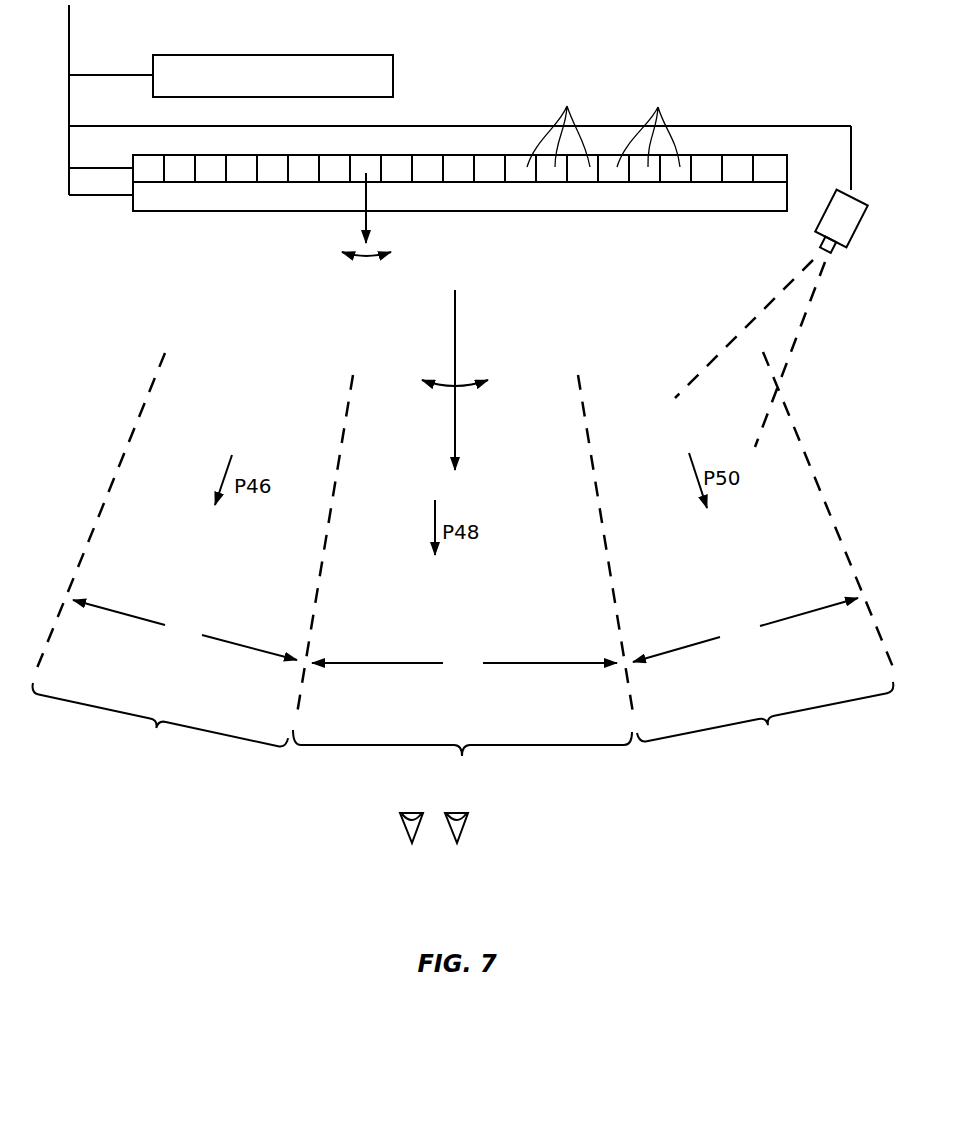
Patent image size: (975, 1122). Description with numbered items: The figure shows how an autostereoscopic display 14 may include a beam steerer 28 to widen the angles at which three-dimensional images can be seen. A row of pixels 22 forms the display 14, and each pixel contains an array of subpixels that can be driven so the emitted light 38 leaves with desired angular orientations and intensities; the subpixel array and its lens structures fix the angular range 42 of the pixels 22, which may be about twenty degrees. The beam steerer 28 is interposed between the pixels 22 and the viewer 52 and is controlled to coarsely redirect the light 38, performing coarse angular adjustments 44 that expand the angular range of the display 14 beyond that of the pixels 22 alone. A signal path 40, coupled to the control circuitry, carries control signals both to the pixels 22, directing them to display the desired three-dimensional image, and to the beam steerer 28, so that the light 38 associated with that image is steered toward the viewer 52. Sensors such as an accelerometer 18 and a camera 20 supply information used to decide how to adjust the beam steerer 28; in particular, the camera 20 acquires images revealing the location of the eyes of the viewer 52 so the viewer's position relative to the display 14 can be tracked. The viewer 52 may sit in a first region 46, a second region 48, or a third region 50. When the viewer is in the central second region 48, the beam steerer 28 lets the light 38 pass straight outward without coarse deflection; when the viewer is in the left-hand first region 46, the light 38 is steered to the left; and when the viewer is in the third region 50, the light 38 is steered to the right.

The signal path 40 is at (69, 35).
The accelerometer 18 is at (393, 72).
The beam steerer 28 is at (154, 212).
The pixels 22 is at (603, 124).
The camera 20 is at (858, 228).
The display 14 is at (212, 262).
The light 38 is at (368, 222).
The angular range 42 is at (366, 259).
The coarse angular adjustments 44 is at (470, 390).
The first region 46 is at (163, 555).
The second region 48 is at (463, 578).
The third region 50 is at (764, 554).
The viewer 52 is at (414, 833).